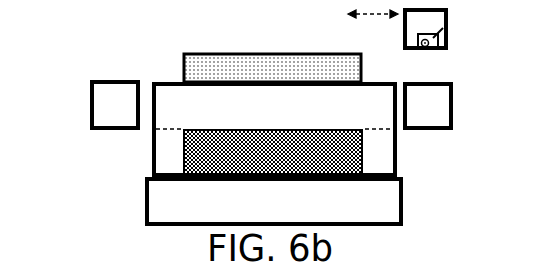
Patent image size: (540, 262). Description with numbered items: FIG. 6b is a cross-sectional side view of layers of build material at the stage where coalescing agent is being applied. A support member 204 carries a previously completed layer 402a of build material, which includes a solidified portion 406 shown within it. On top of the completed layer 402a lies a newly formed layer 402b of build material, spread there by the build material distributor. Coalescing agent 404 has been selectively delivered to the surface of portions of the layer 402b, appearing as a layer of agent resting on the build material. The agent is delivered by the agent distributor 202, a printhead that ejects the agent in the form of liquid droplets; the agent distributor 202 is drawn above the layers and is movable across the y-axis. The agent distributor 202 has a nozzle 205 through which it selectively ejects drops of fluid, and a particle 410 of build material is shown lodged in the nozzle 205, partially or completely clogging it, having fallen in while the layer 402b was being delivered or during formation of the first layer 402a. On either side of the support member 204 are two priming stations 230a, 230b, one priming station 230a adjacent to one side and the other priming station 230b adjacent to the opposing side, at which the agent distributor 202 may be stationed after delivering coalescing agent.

The agent distributor 202 is at (403, 33).
The support member 204 is at (403, 217).
The nozzle 205 is at (428, 60).
The priming station 230a is at (90, 110).
The priming station 230b is at (453, 108).
The completed layer 402a is at (152, 168).
The layer of build material 402b is at (168, 82).
The coalescing agent 404 is at (213, 54).
The solidified portion 406 is at (366, 164).
The particle 410 is at (448, 24).